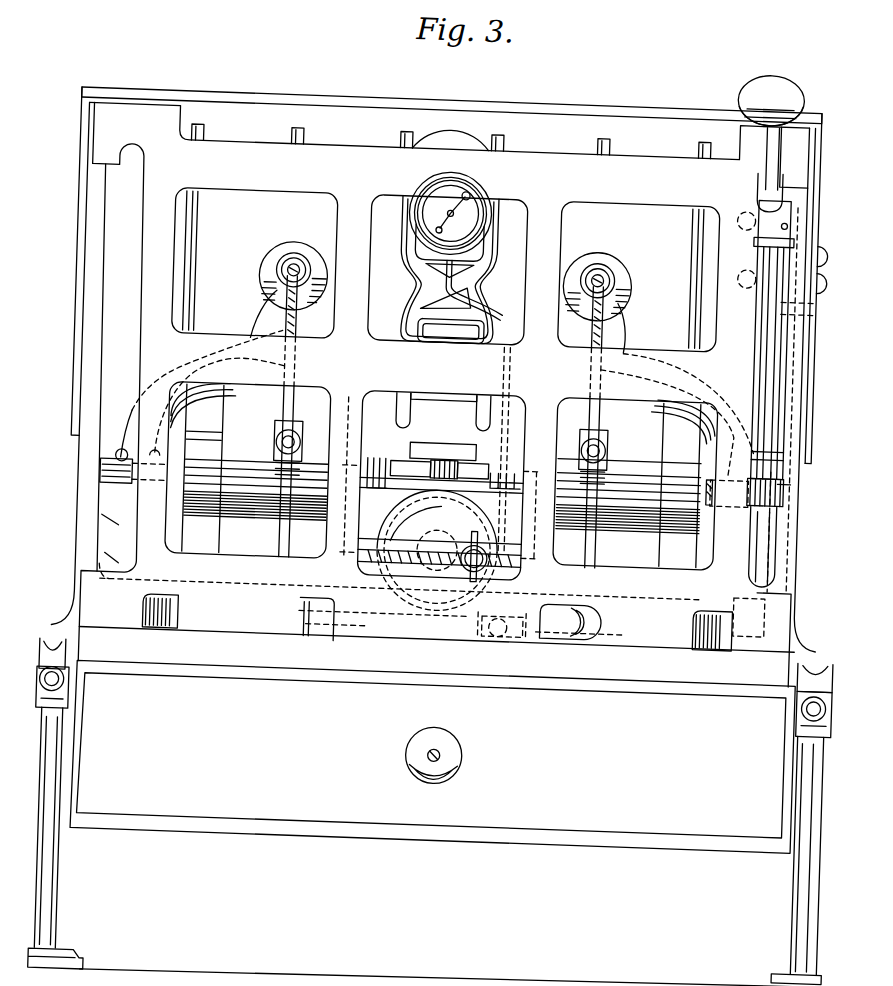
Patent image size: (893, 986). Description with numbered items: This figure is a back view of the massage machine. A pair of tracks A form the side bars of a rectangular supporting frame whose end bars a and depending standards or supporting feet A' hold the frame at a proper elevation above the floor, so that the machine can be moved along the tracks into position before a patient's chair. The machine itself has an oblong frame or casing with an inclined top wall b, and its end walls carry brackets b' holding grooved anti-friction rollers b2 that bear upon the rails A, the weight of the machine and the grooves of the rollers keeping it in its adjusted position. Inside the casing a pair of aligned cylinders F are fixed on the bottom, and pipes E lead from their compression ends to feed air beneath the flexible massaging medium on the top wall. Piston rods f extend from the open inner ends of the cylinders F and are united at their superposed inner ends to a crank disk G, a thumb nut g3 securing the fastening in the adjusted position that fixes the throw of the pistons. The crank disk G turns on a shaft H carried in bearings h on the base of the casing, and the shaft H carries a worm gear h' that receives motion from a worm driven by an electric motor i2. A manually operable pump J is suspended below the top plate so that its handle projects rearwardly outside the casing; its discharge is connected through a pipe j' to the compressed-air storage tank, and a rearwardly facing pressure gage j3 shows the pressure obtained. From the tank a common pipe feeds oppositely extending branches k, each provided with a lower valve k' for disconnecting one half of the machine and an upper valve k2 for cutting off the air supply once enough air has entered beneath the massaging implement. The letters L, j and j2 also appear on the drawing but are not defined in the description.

The supporting feet A' is at (435, 519).
The tracks A is at (434, 701).
The end bars a is at (428, 846).
The inclined top wall b is at (447, 275).
The brackets b' is at (437, 642).
The anti-friction rollers b2 is at (428, 635).
The pipes E is at (429, 394).
The cylinders F is at (441, 476).
The crank disk G is at (441, 502).
The shaft H is at (440, 536).
The lever L is at (405, 519).
The pump J is at (578, 546).
The pipe j is at (800, 482).
The pipe j' is at (760, 132).
The valve j2 is at (395, 212).
The pressure gage j3 is at (463, 212).
The branches k is at (421, 421).
The lower valves k' is at (611, 455).
The upper valves k2 is at (458, 280).
The motor i2 is at (224, 418).
The piston rods f is at (438, 440).
The thumb nut g3 is at (474, 546).
The bearings h is at (471, 613).
The worm gear h' is at (343, 613).